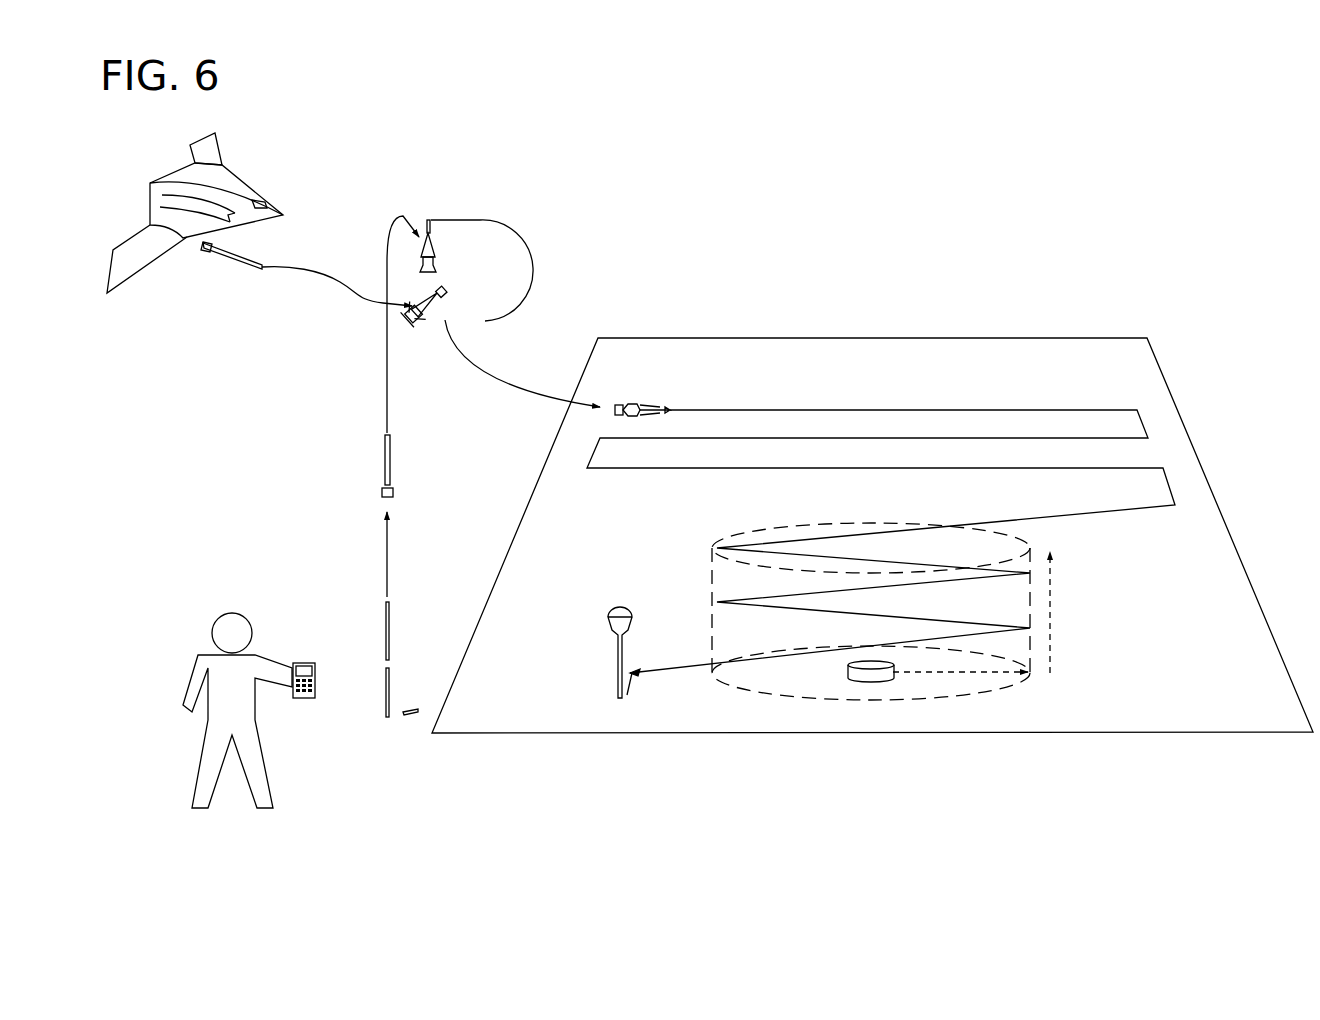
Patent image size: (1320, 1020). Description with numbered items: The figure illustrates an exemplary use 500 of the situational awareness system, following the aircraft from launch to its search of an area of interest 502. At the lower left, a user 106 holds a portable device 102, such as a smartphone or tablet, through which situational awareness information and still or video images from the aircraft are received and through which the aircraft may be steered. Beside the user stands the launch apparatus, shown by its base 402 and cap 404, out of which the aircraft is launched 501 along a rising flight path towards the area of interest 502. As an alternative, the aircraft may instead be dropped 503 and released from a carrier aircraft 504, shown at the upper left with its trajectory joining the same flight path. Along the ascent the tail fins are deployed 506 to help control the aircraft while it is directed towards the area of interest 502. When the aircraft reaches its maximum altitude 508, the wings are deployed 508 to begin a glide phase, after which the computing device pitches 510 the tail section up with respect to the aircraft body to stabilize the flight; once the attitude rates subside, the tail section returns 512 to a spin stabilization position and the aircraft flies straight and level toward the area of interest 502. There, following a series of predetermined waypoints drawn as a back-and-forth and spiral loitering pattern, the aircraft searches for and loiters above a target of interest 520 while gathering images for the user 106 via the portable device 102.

The exemplary use 500 is at (1073, 182).
The area of interest 502 is at (1163, 372).
The dropping of aircraft 503 is at (170, 290).
The carrier aircraft 504 is at (237, 177).
The deploying of tail fins 506 is at (402, 463).
The maximum altitude / deploying of wings 508 is at (400, 212).
The pitching of tail section 510 is at (465, 310).
The returning of tail section 512 is at (650, 396).
The launching of aircraft 501 is at (399, 620).
The target of interest 520 is at (884, 682).
The base 402 is at (383, 707).
The cap 404 is at (410, 717).
The user 106 is at (232, 613).
The portable device 102 is at (307, 662).